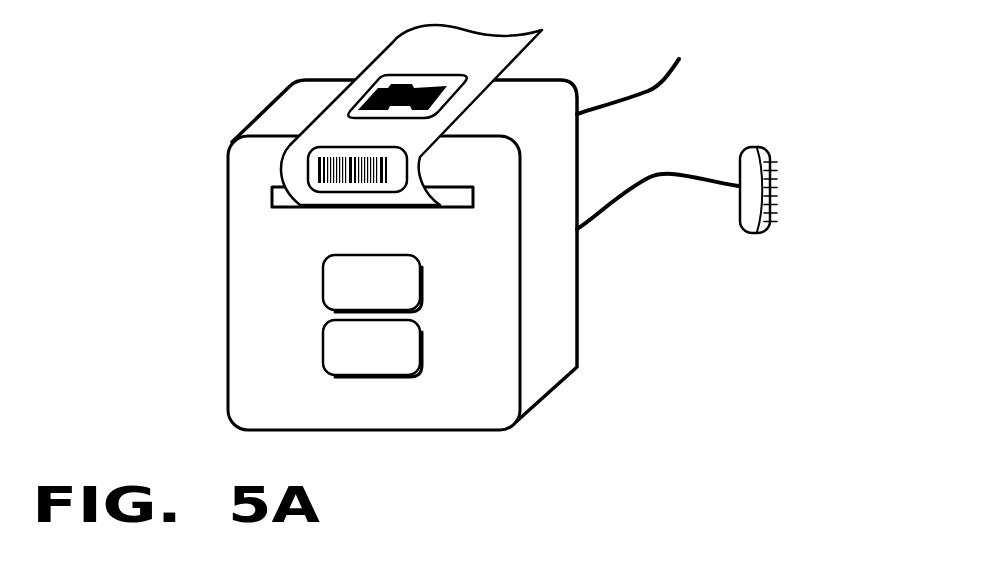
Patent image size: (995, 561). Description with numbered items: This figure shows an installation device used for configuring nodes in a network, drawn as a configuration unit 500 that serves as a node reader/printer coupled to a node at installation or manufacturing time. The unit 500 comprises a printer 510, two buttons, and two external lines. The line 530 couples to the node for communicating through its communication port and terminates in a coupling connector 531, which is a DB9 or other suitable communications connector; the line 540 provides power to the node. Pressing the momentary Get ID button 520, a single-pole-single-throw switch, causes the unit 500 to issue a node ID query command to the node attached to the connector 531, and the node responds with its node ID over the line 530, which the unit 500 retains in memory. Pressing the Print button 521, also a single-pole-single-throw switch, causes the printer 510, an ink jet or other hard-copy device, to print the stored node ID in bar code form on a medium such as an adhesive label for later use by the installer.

The configuration unit 500 is at (502, 418).
The printer 510 is at (270, 195).
The Get ID button 520 is at (415, 306).
The Print button 521 is at (372, 348).
The external line 530 is at (612, 200).
The coupling connector 531 is at (772, 157).
The external line 540 is at (651, 89).